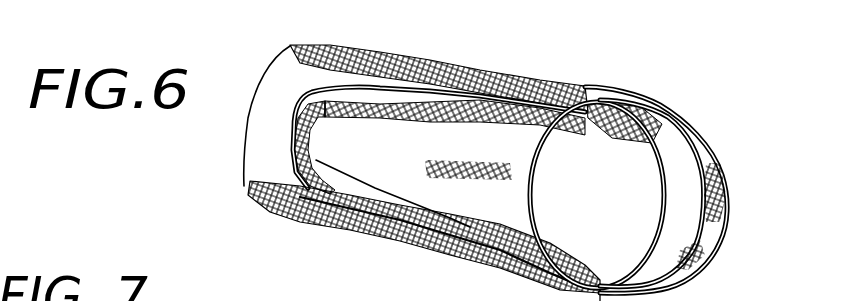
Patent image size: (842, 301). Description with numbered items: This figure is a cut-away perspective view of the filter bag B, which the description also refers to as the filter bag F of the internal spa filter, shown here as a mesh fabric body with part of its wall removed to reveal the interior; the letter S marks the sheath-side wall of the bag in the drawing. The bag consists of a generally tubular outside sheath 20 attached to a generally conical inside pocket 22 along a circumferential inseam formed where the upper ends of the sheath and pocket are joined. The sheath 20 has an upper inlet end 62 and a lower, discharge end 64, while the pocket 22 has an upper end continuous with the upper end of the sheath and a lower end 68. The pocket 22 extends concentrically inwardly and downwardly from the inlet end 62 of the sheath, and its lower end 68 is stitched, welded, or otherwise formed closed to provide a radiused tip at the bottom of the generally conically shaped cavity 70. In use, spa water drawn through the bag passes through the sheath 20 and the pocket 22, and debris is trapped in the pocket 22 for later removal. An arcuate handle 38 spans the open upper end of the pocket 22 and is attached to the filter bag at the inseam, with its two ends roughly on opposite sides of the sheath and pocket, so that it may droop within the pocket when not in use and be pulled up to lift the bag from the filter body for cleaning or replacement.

The discharge end 64 is at (282, 62).
The sleeve S is at (355, 52).
The filter bag F is at (482, 72).
The lower end of the pocket 68 is at (292, 125).
The conically shaped cavity 70 is at (538, 103).
The pocket 22 is at (414, 179).
The sheath 20 is at (306, 218).
The filter bag B is at (597, 195).
The upper inlet end 62 is at (674, 156).
The handle 38 is at (712, 232).